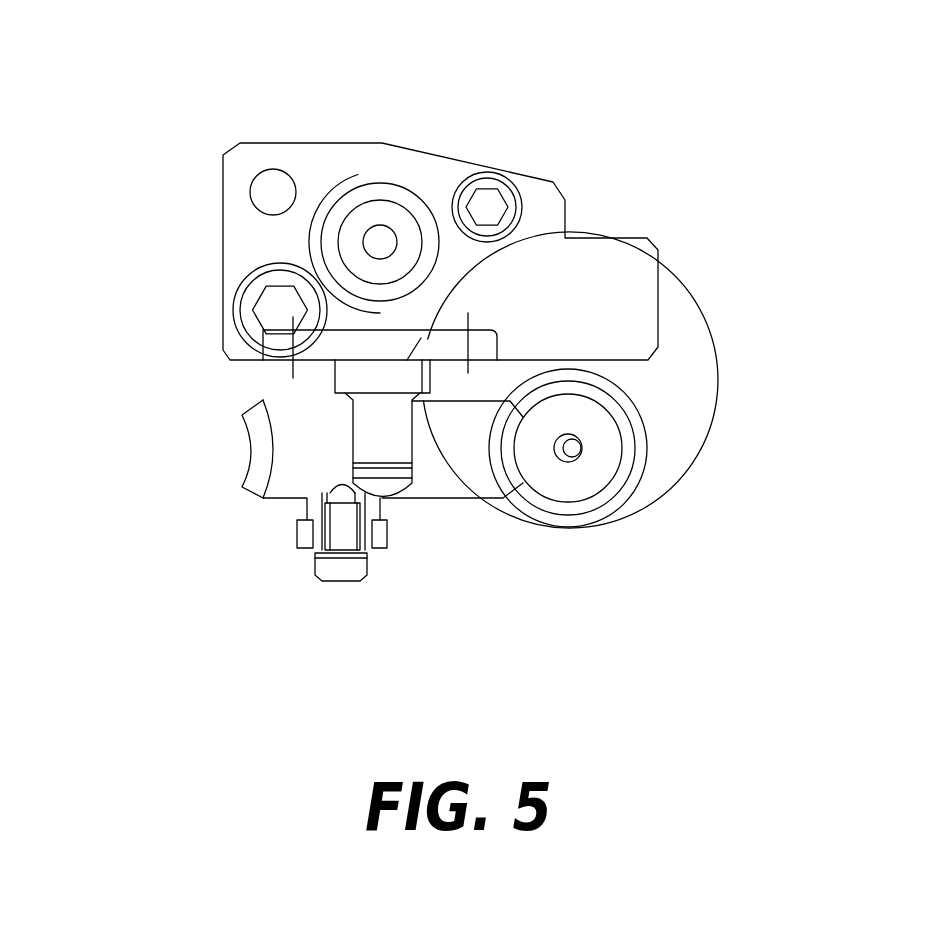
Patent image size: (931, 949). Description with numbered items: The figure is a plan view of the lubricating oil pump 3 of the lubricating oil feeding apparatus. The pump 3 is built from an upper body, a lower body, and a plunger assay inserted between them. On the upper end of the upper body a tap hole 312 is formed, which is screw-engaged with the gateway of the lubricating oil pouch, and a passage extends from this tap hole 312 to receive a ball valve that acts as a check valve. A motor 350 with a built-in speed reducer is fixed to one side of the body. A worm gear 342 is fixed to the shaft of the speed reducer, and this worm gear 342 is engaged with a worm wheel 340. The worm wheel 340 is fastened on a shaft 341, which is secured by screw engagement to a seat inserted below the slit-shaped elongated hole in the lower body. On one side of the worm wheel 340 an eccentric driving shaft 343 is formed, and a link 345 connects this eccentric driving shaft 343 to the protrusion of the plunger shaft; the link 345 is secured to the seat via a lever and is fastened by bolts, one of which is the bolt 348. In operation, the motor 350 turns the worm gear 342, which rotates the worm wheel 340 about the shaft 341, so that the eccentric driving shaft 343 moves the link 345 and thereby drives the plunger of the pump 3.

The pump 3 is at (463, 157).
The tap hole 312 is at (367, 218).
The motor 350 is at (698, 357).
The worm gear 342 is at (633, 462).
The shaft 341 is at (363, 428).
The worm wheel 340 is at (264, 470).
The eccentric driving shaft 343 is at (317, 512).
The link 345 is at (378, 532).
The bolt 348 is at (353, 568).